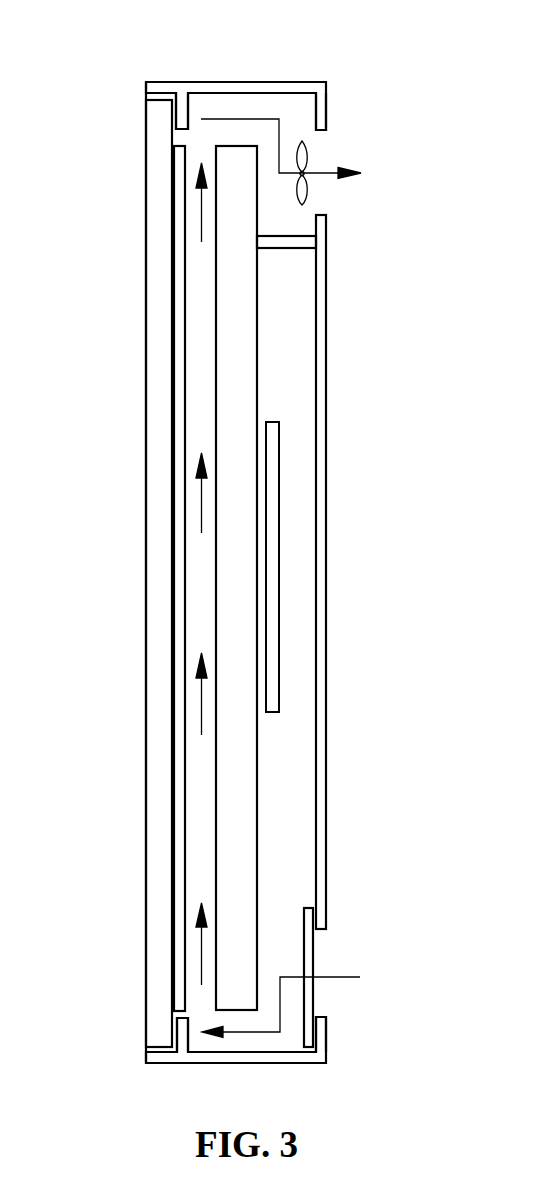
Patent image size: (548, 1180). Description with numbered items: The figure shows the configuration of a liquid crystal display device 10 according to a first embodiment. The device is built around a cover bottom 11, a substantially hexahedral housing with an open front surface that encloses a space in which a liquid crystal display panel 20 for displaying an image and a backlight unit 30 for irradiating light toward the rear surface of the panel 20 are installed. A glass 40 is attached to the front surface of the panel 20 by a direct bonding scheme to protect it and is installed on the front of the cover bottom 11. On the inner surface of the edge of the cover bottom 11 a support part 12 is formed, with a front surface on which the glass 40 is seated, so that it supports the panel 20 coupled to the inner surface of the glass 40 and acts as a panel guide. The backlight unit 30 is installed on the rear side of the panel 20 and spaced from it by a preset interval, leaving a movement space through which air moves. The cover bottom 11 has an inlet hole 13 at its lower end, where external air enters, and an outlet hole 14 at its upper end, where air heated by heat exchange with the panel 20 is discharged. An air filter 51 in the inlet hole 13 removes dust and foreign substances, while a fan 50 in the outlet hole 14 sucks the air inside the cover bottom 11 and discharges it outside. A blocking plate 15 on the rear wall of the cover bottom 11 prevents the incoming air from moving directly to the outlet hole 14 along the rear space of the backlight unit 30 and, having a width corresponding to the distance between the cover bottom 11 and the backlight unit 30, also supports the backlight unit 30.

The liquid crystal display device 10 is at (252, 531).
The cover bottom 11 is at (273, 82).
The support part 12 is at (175, 118).
The inlet hole 13 is at (320, 1017).
The outlet hole 14 is at (323, 130).
The blocking plate 15 is at (282, 249).
The liquid crystal display panel 20 is at (174, 385).
The backlight unit 30 is at (258, 334).
The glass 40 is at (147, 310).
The fan 50 is at (310, 190).
The air filter 51 is at (313, 953).